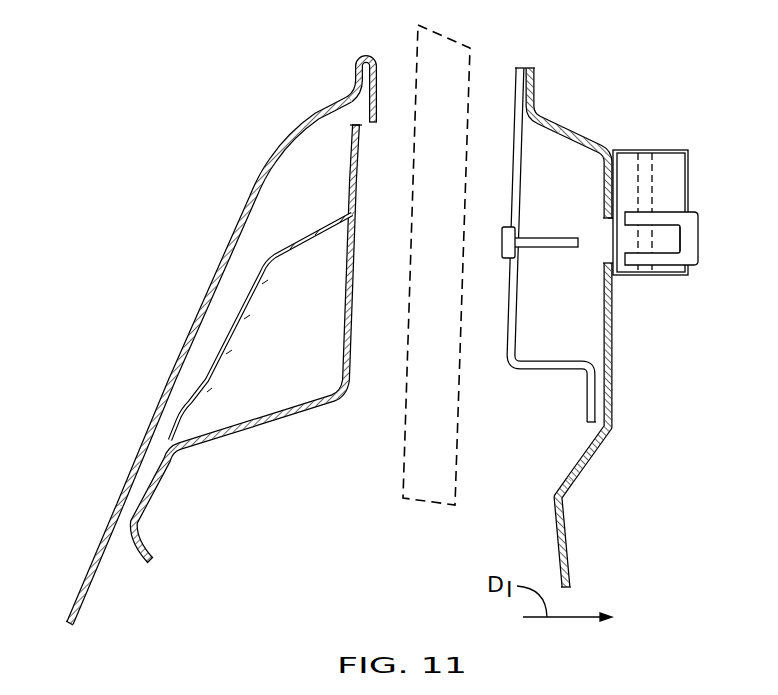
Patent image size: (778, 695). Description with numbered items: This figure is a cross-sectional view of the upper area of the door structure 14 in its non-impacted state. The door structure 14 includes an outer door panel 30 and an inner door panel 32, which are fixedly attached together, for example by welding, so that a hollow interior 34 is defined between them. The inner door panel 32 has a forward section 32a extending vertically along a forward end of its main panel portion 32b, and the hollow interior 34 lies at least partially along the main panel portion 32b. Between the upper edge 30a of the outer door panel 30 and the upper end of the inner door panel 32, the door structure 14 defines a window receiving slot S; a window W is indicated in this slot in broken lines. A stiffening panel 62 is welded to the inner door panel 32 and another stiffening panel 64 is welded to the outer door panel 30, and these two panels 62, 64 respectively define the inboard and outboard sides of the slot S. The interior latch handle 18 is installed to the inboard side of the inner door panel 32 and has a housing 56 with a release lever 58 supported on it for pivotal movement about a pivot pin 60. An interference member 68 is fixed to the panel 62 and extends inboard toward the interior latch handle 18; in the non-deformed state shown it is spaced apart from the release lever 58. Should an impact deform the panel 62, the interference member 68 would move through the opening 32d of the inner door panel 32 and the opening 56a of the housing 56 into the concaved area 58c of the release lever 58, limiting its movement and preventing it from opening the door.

The door structure 14 is at (242, 95).
The outer door panel 30 is at (268, 163).
The upper edge of the outer door panel 30a is at (364, 53).
The hollow interior 34 is at (92, 587).
The panel 64 is at (352, 323).
The window receiving slot S is at (367, 163).
The wall W is at (470, 67).
The inner door panel 32 is at (582, 308).
The forward section 32a is at (527, 67).
The main panel portion 32b is at (568, 543).
The opening of the inner door panel 32d is at (602, 262).
The panel 62 is at (540, 372).
The interference member 68 is at (543, 243).
The interior latch handle 18 is at (659, 214).
The housing 56 is at (690, 195).
The opening of the housing 56a is at (609, 222).
The release lever 58 is at (700, 243).
The concaved area 58c is at (678, 238).
The pivot pin 60 is at (652, 173).